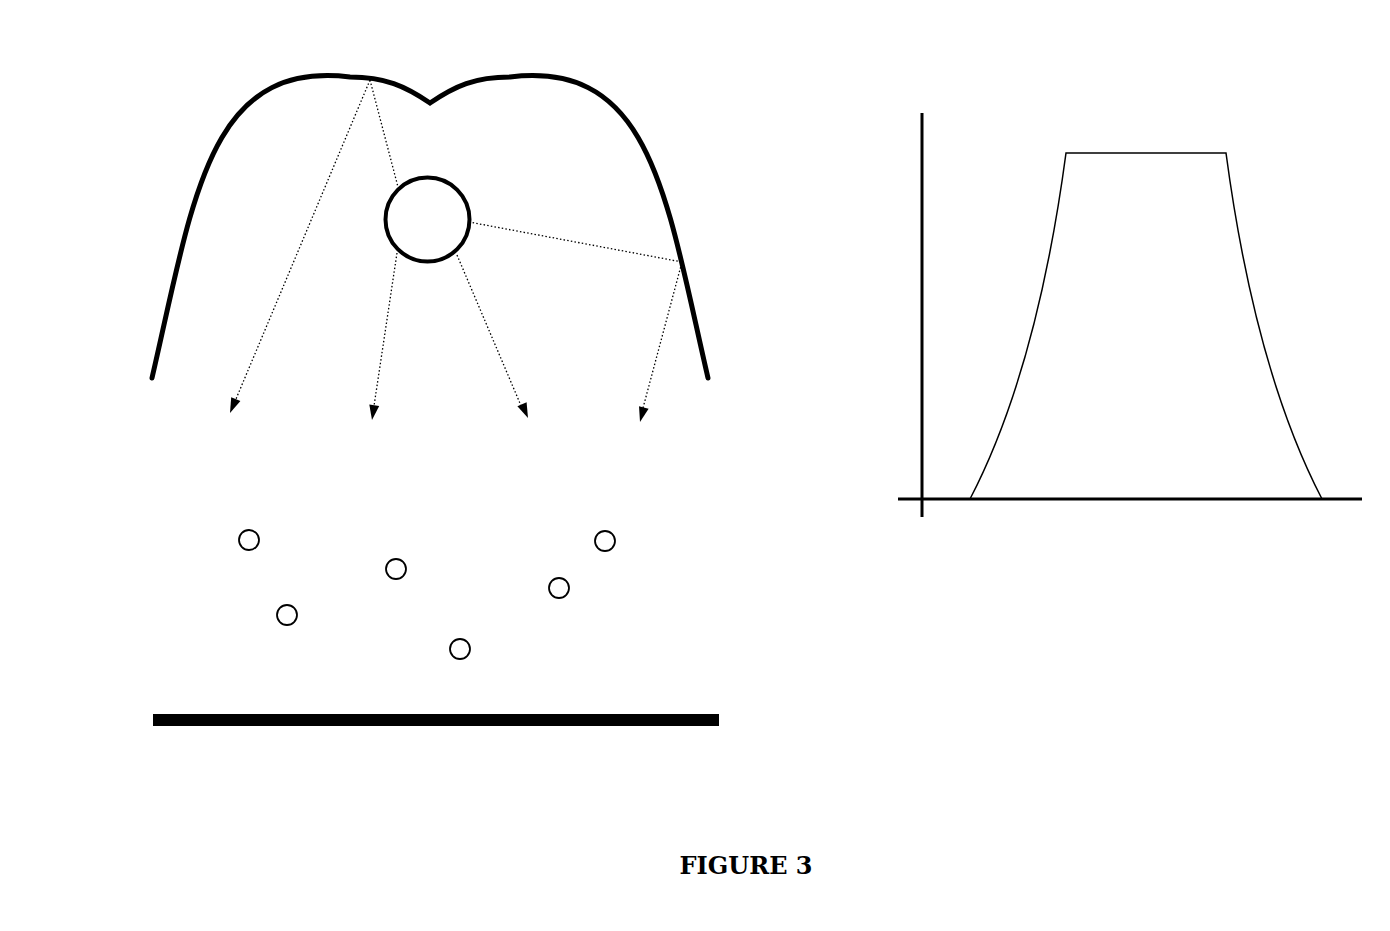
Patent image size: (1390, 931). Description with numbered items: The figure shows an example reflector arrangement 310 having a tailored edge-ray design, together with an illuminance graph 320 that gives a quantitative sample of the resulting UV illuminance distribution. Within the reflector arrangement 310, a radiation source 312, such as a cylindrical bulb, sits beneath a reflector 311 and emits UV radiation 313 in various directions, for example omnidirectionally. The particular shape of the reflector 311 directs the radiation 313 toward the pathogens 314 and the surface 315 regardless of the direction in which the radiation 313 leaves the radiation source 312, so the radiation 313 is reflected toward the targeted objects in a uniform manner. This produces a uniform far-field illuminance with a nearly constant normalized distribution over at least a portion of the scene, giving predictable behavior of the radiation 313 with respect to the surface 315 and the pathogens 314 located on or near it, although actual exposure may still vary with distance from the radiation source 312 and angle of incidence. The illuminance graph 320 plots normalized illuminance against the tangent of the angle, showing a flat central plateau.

The reflector arrangement 310 is at (183, 93).
The reflector 311 is at (572, 92).
The radiation source 312 is at (443, 177).
The UV radiation 313 is at (488, 316).
The pathogens 314 is at (606, 601).
The surface 315 is at (586, 728).
The illuminance graph 320 is at (883, 92).